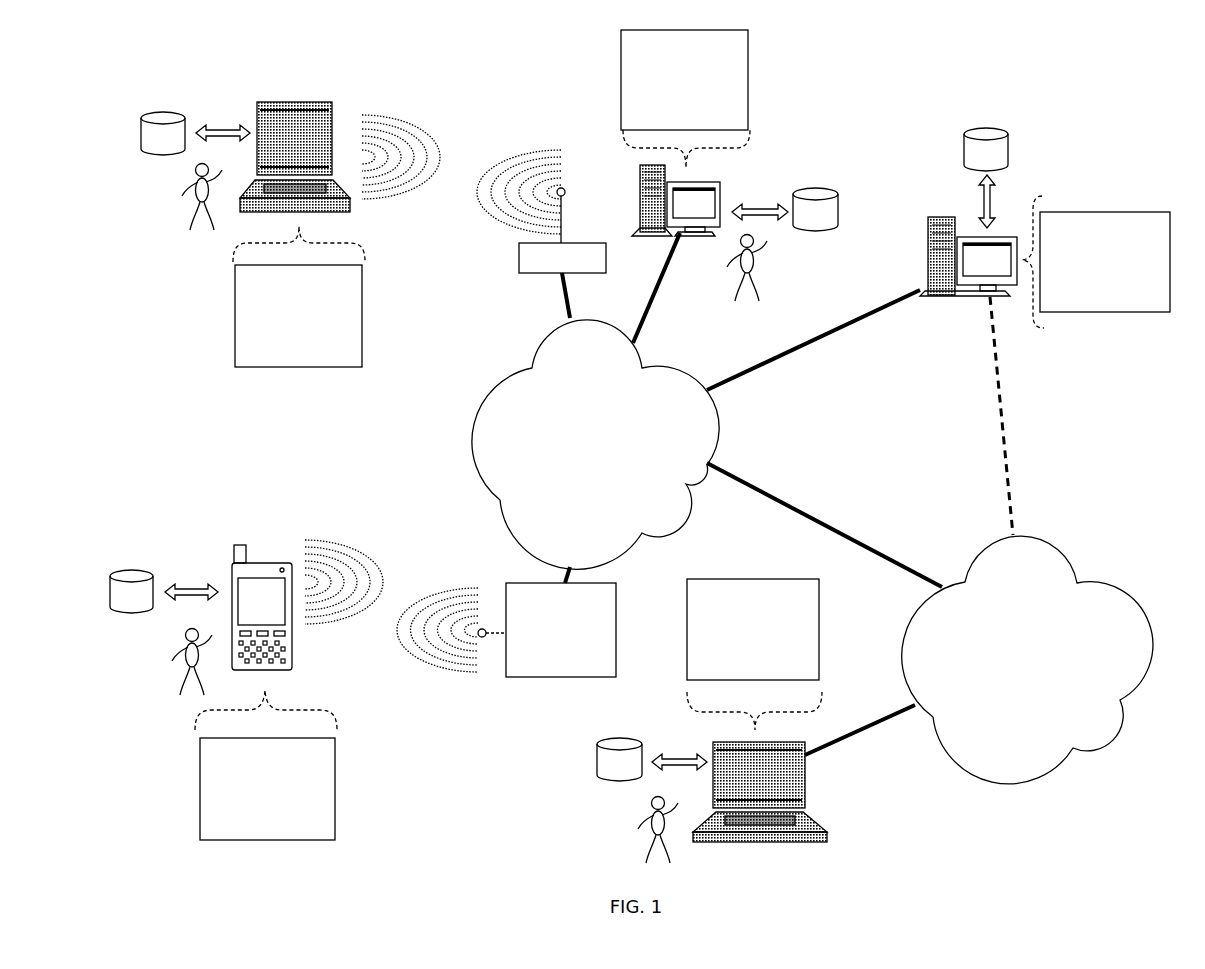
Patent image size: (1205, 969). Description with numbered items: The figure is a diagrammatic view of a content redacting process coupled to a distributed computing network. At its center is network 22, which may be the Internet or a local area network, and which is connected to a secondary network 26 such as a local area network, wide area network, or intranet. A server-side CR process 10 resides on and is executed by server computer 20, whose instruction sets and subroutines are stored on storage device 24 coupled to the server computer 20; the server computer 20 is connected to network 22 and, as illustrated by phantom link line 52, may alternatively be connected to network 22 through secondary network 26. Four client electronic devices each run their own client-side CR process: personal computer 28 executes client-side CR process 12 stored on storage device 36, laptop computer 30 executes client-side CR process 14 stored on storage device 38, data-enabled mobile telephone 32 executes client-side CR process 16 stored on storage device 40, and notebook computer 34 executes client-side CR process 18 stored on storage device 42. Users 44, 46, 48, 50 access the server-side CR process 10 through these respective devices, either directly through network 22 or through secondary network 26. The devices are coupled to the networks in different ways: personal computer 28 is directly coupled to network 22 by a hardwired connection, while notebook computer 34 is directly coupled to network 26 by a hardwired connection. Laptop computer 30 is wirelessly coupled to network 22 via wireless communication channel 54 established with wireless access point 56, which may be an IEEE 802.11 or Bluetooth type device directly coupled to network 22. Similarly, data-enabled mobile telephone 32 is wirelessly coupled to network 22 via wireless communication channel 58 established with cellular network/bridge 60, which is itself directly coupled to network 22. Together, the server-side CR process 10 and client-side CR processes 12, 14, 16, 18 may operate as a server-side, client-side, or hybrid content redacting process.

The server-side CR process 10 is at (1170, 233).
The client-side CR process 12 is at (748, 110).
The client-side CR process 14 is at (362, 290).
The client-side CR process 16 is at (335, 755).
The client-side CR process 18 is at (819, 650).
The server computer 20 is at (925, 240).
The network 22 is at (595, 444).
The storage device 24 is at (986, 149).
The secondary network 26 is at (1027, 660).
The personal computer 28 is at (721, 198).
The laptop computer 30 is at (330, 126).
The data-enabled mobile telephone 32 is at (293, 617).
The notebook computer 34 is at (805, 785).
The storage device 36 is at (815, 209).
The storage device 38 is at (163, 133).
The storage device 40 is at (131, 591).
The storage device 42 is at (619, 759).
The user 44 is at (767, 249).
The user 46 is at (167, 188).
The user 48 is at (168, 640).
The user 50 is at (625, 818).
The phantom link line 52 is at (998, 405).
The wireless communication channel 54 is at (468, 142).
The wireless access point 56 is at (512, 259).
The wireless communication channel 58 is at (400, 583).
The cellular network/bridge 60 is at (617, 597).